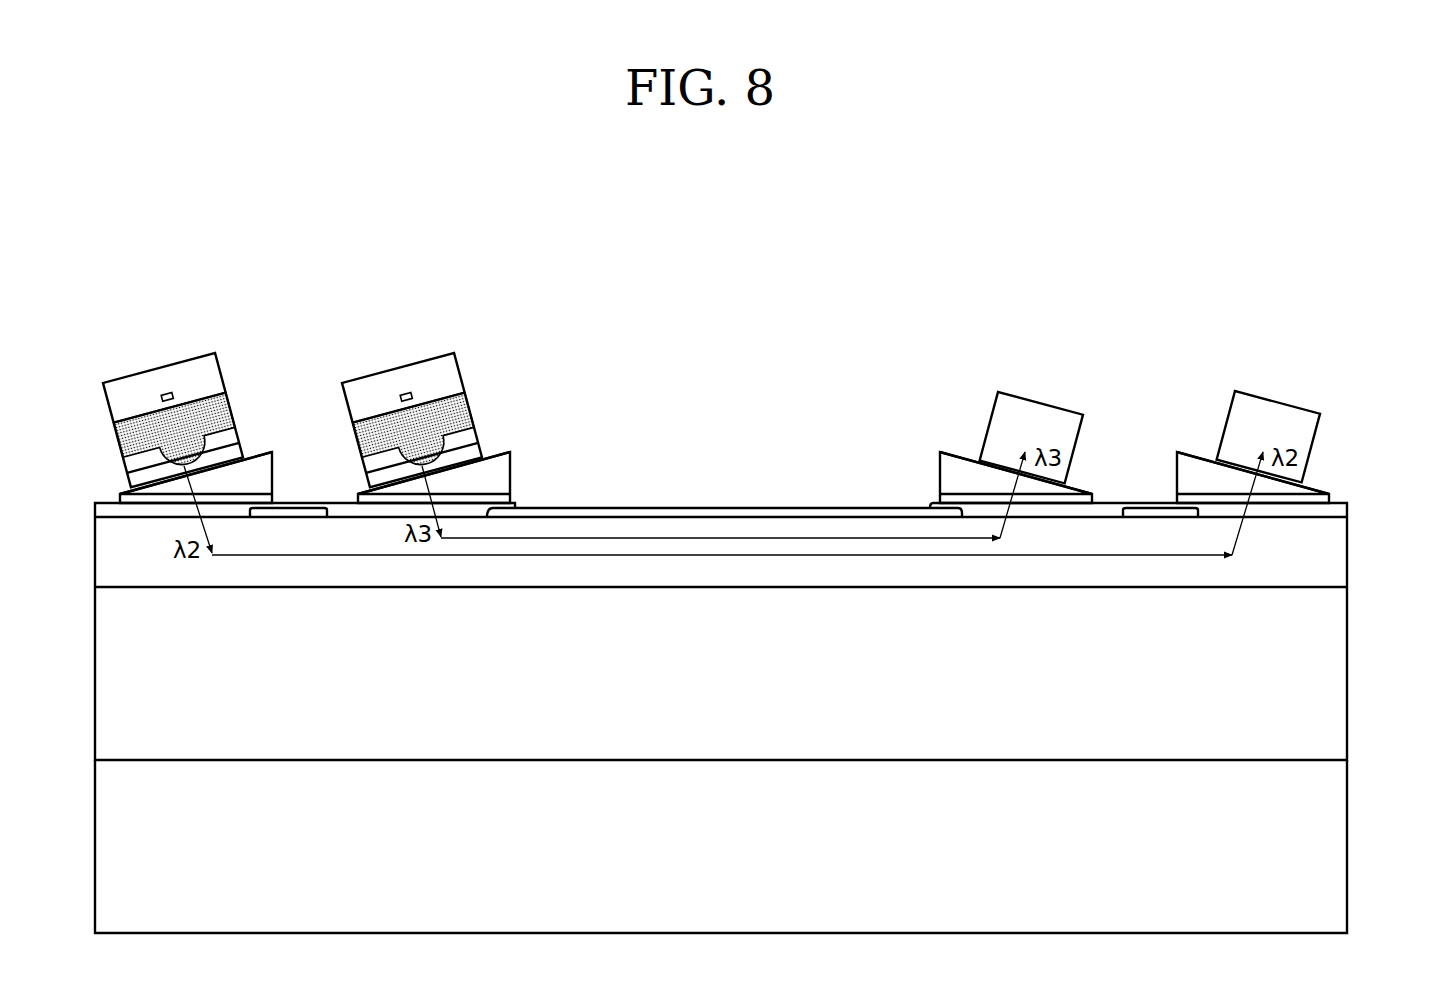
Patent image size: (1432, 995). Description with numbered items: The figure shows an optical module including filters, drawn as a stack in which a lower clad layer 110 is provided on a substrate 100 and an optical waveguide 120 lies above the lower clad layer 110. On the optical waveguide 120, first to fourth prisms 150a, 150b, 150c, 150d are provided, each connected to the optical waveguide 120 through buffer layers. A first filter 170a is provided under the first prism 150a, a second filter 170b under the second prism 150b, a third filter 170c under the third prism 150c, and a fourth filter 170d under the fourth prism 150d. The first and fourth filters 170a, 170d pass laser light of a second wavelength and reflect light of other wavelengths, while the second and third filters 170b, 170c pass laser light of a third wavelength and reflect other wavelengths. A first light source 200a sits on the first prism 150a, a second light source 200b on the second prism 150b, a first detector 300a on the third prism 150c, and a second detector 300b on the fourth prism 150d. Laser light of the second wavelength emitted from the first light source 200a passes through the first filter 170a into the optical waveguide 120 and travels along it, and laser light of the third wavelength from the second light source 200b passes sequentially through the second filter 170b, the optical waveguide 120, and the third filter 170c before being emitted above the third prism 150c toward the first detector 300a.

The substrate 100 is at (1333, 845).
The lower clad layer 110 is at (1333, 675).
The optical waveguide 120 is at (1333, 552).
The first prism 150a is at (257, 452).
The second prism 150b is at (495, 452).
The third prism 150c is at (955, 455).
The fourth prism 150d is at (1192, 455).
The first filter 170a is at (264, 500).
The second filter 170b is at (502, 500).
The third filter 170c is at (948, 498).
The fourth filter 170d is at (1185, 498).
The first light source 200a is at (150, 347).
The second light source 200b is at (388, 347).
The first detector 300a is at (1033, 345).
The second detector 300b is at (1270, 345).